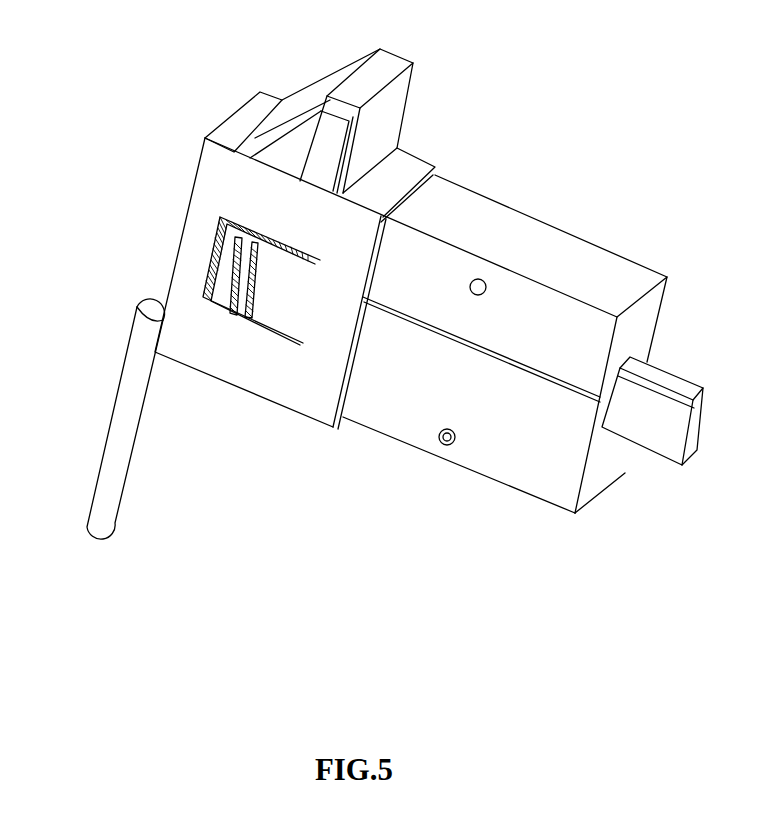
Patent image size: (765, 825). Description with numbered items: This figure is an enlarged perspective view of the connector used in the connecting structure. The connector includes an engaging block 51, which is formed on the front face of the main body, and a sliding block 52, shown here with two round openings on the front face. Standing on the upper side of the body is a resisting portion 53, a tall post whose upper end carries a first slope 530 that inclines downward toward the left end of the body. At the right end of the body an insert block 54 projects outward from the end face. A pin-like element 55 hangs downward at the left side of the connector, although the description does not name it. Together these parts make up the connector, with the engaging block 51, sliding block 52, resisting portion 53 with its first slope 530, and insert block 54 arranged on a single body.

The engaging block 51 is at (218, 286).
The sliding block 52 is at (452, 430).
The resisting portion 53 is at (370, 62).
The first slope 530 is at (267, 120).
The insert block 54 is at (638, 418).
The pin 55 is at (132, 405).